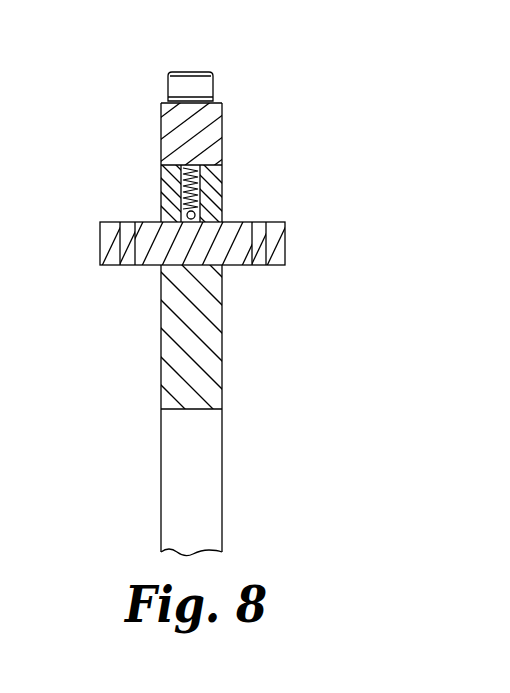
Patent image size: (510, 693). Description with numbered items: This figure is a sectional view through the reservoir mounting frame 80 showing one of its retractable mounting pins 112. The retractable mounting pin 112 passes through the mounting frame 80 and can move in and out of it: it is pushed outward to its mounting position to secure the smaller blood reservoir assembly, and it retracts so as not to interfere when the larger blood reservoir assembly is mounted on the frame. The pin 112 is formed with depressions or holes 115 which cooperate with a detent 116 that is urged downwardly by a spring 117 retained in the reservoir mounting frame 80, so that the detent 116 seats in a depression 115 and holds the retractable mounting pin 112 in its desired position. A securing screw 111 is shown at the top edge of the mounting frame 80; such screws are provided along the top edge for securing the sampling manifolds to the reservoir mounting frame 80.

The reservoir mounting frame 80 is at (150, 373).
The securing screw 111 is at (193, 83).
The retractable mounting pin 112 is at (285, 232).
The depression or hole 115 is at (123, 267).
The detent 116 is at (201, 208).
The spring 117 is at (180, 179).